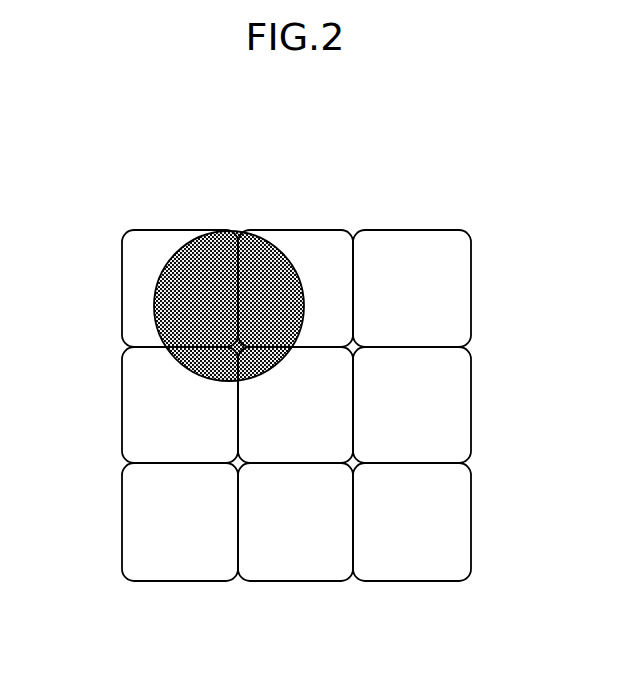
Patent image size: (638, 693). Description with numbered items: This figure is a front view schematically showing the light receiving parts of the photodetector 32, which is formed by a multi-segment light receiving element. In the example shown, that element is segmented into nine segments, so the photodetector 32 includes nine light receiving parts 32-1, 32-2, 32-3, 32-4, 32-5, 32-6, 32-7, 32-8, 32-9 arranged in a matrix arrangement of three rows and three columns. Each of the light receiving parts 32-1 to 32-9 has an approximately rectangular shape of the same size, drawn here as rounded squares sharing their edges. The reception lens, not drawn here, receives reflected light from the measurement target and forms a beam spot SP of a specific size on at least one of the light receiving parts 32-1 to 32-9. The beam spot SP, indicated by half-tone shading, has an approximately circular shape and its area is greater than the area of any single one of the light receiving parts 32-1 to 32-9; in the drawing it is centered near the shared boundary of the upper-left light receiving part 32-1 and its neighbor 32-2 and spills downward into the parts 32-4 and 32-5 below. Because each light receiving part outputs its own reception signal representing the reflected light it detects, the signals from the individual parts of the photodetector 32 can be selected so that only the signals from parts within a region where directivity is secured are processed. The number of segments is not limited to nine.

The photodetector 32 is at (293, 380).
The light receiving part 32-1 is at (150, 250).
The light receiving part 32-2 is at (313, 250).
The light receiving part 32-3 is at (412, 252).
The light receiving part 32-4 is at (143, 392).
The light receiving part 32-5 is at (250, 416).
The light receiving part 32-6 is at (449, 405).
The light receiving part 32-7 is at (180, 560).
The light receiving part 32-8 is at (297, 560).
The light receiving part 32-9 is at (412, 560).
The beam spot SP is at (227, 255).